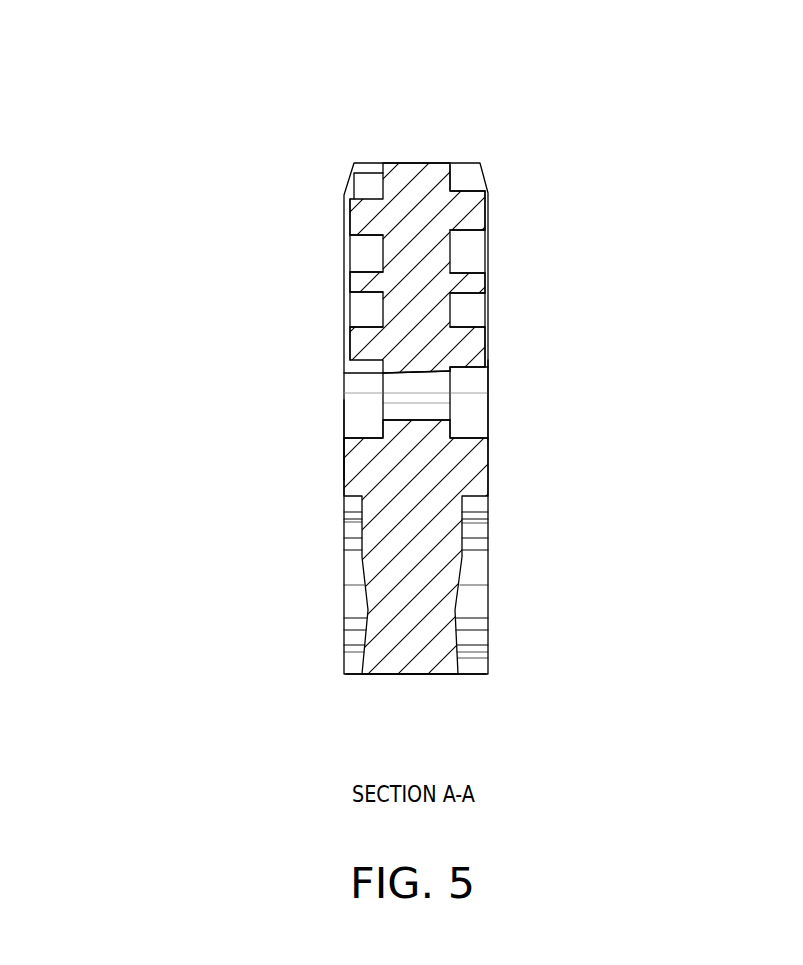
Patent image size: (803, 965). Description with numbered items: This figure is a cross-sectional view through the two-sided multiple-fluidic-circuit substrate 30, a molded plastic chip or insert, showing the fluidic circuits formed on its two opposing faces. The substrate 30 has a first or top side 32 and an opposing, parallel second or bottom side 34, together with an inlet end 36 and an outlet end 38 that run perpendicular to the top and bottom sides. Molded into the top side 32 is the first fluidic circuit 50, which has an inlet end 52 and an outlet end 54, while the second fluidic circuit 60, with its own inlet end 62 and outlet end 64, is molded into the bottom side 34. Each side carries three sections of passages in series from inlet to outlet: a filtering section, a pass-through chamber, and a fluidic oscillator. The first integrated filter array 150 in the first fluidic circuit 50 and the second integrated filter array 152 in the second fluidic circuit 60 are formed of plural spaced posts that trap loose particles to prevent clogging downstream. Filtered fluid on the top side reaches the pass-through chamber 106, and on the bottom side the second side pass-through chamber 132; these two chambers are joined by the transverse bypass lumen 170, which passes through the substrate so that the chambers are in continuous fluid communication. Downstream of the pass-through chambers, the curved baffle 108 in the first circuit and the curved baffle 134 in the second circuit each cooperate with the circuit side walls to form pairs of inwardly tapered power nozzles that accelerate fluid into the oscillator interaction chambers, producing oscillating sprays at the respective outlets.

The two-sided multiple-fluidic-circuit substrate 30 is at (438, 130).
The first or top side 32 is at (343, 204).
The second or bottom side 34 is at (489, 210).
The inlet end 36 is at (444, 163).
The outlet end 38 is at (412, 676).
The first fluidic circuit 50 is at (336, 436).
The inlet end 52 is at (368, 163).
The outlet end 54 is at (343, 676).
The second fluidic circuit 60 is at (494, 387).
The inlet end 62 is at (473, 177).
The outlet end 64 is at (475, 676).
The pass-through chamber 106 is at (357, 413).
The curved baffle 108 is at (351, 488).
The second side pass-through chamber 132 is at (468, 412).
The curved baffle 134 is at (455, 468).
The first integrated filter array 150 is at (336, 283).
The second integrated filter array 152 is at (496, 277).
The bypass lumen 170 is at (420, 394).